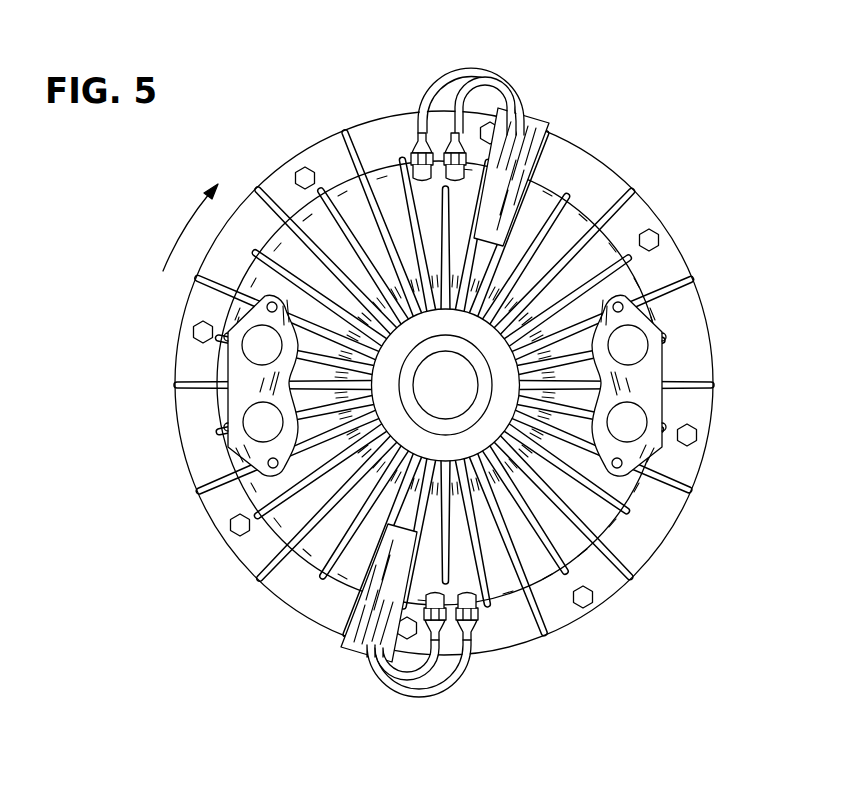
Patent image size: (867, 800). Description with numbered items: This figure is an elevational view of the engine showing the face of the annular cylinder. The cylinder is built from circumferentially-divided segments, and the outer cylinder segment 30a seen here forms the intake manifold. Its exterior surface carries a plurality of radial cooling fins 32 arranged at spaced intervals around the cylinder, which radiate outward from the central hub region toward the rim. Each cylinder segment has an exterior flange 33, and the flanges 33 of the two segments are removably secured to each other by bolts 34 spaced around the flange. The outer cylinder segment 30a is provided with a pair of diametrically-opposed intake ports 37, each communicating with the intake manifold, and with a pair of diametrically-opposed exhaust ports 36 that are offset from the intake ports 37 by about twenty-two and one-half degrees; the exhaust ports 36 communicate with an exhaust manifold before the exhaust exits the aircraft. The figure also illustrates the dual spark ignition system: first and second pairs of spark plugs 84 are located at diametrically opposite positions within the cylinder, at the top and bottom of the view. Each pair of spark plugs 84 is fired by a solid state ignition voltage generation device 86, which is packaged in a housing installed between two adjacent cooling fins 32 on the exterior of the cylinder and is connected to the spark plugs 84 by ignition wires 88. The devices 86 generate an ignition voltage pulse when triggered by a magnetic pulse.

The outer cylinder segment 30a is at (615, 525).
The radial cooling fins 32 is at (570, 198).
The exterior flange 33 is at (693, 357).
The bolts 34 is at (654, 238).
The exhaust ports 36 is at (253, 355).
The intake ports 37 is at (254, 432).
The spark plugs 84 is at (454, 133).
The ignition voltage generation device 86 is at (522, 127).
The ignition wires 88 is at (452, 68).